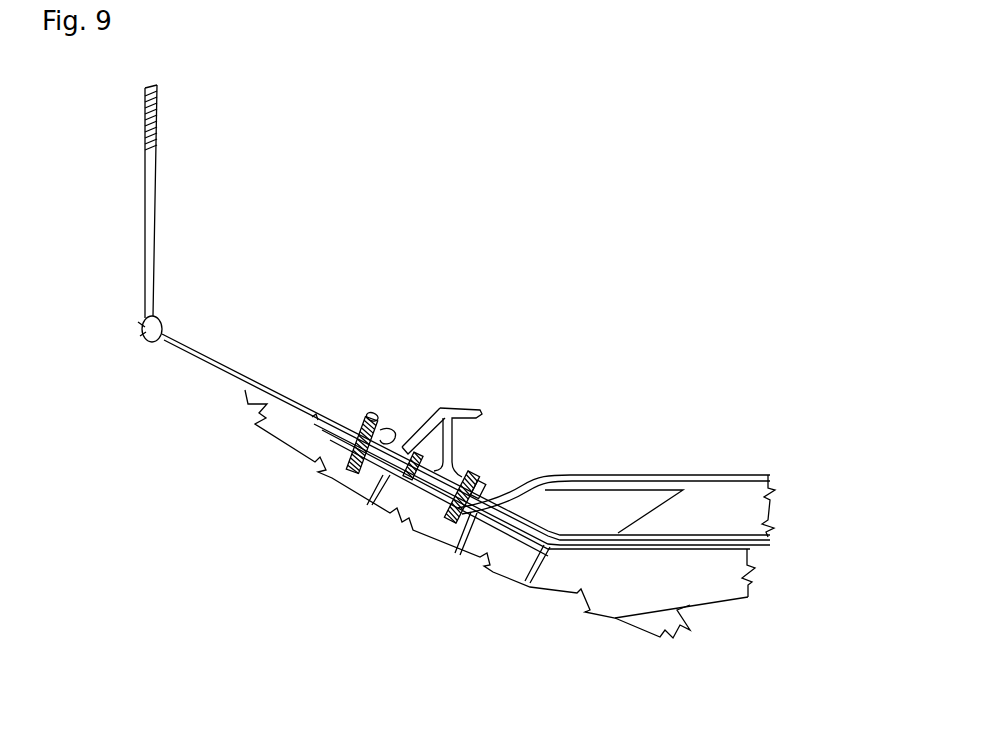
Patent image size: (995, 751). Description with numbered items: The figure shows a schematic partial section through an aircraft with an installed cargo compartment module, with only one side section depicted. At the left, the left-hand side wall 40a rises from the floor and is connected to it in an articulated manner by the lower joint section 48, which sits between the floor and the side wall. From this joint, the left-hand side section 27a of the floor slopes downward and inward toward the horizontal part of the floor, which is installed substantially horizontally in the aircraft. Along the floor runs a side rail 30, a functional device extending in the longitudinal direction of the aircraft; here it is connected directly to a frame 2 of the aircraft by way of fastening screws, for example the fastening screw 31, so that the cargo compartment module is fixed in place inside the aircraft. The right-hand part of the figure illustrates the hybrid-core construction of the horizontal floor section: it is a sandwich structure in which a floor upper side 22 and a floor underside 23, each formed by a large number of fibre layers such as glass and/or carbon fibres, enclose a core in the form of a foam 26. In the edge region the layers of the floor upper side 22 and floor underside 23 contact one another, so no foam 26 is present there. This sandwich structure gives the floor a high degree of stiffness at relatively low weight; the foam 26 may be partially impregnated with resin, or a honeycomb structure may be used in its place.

The left-hand side wall 40a is at (145, 207).
The lower joint section 48 is at (155, 318).
The left-hand side section 27a is at (222, 368).
The fastening screw 31 is at (366, 412).
The side rail 30 is at (455, 407).
The floor upper side 22 is at (768, 475).
The foam 26 is at (770, 510).
The floor underside 23 is at (768, 537).
The frame 2 is at (388, 518).